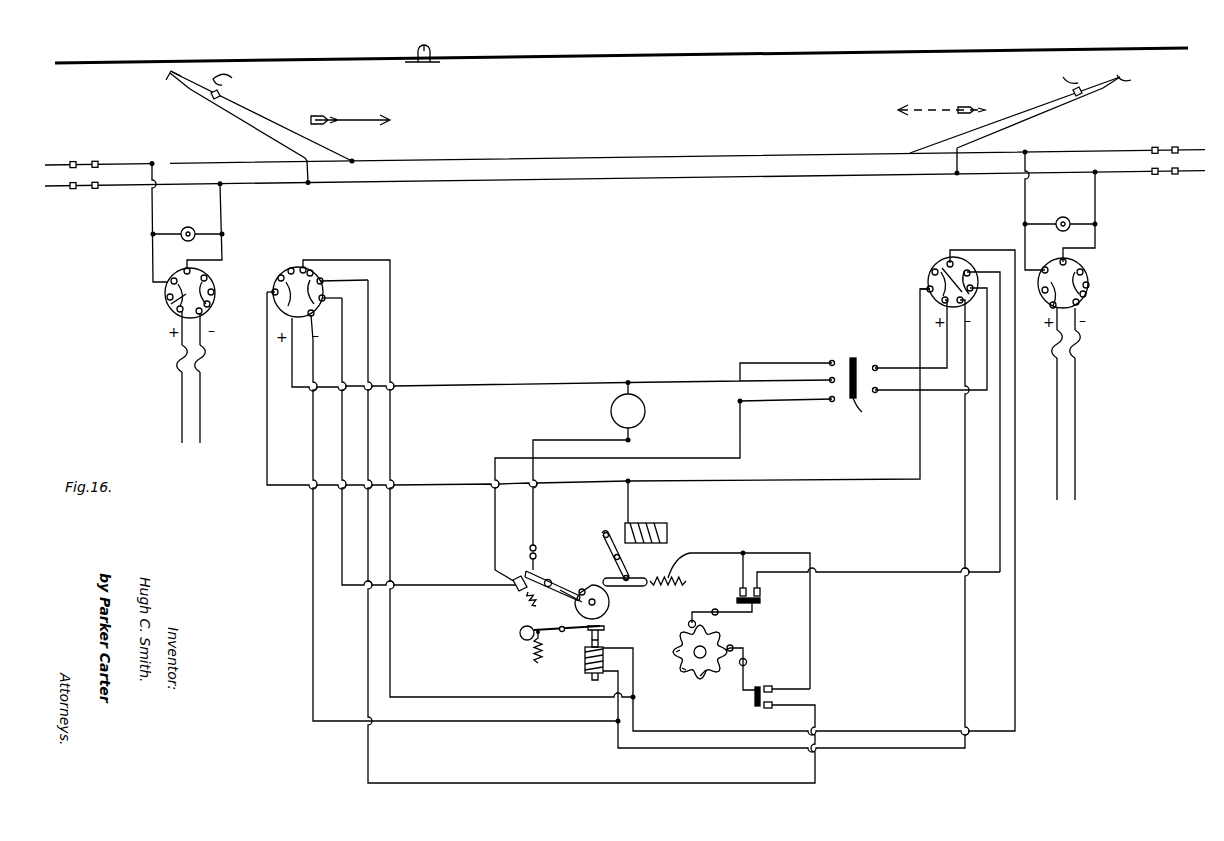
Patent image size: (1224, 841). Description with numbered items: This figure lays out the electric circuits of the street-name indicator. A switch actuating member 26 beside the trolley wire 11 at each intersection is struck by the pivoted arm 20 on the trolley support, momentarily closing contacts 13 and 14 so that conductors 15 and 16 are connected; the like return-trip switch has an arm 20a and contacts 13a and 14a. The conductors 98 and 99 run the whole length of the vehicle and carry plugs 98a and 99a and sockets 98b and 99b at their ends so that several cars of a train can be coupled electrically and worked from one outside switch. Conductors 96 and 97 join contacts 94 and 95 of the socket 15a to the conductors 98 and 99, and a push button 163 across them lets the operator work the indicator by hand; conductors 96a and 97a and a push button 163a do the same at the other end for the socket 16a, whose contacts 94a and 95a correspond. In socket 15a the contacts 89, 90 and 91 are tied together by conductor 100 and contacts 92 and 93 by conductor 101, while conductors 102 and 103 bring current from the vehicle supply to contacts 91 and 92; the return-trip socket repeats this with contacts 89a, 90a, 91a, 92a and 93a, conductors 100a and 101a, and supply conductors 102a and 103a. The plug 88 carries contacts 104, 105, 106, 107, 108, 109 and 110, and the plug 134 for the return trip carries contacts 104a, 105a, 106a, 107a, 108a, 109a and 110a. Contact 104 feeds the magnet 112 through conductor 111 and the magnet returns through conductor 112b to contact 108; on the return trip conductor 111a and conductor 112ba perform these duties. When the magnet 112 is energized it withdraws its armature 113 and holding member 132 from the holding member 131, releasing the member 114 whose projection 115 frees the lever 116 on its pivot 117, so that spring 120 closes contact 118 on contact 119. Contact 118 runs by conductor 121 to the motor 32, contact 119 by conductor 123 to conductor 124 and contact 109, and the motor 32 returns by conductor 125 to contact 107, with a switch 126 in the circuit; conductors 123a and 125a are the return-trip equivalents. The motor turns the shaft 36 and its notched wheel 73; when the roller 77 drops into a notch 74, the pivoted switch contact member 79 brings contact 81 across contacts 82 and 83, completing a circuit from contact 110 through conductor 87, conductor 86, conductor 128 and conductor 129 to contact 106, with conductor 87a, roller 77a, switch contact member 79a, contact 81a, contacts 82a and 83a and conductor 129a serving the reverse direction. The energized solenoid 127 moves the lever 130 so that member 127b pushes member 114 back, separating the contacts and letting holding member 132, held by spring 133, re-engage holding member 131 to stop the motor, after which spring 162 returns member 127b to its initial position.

The trolley wire 11 is at (588, 56).
The switch actuating member 26 is at (440, 62).
The pivoted arm 20 is at (166, 79).
The contact 13 is at (232, 78).
The contact 14 is at (212, 100).
The conductor 15 is at (262, 112).
The conductor 16 is at (258, 128).
The pivoted arm 20a is at (1130, 81).
The contact 13a is at (1068, 80).
The contact 14a is at (1085, 90).
The plug socket 15a is at (1015, 113).
The plug socket 16a is at (1025, 118).
The conductor 99 is at (53, 164).
The conductor 98 is at (52, 189).
The plug 99a is at (78, 160).
The socket 99b is at (98, 160).
The plug 98a is at (73, 191).
The socket 98b is at (96, 191).
The conductor 96a is at (152, 206).
The conductor 97a is at (226, 201).
The push button 163a is at (188, 227).
The conductor 96 is at (1025, 193).
The conductor 97 is at (1097, 193).
The push button 163 is at (1063, 217).
The contact 94a is at (171, 279).
The contact 95a is at (185, 268).
The contact 89a is at (207, 279).
The conductor 100a is at (214, 292).
The contact 90a is at (210, 303).
The contact 93a is at (168, 297).
The conductor 101a is at (172, 302).
The contact 92a is at (178, 312).
The contact 91a is at (180, 330).
The conductor 103a is at (181, 410).
The conductor 102a is at (202, 408).
The plug 134 is at (293, 266).
The contact 105a is at (280, 274).
The contact 104a is at (312, 270).
The contact 106a is at (274, 288).
The contact 110a is at (345, 261).
The contact 109a is at (368, 280).
The contact 108a is at (342, 298).
The contact 107a is at (313, 318).
The conductor 111a is at (390, 258).
The conductor 87a is at (368, 337).
The conductor 123a is at (342, 358).
The conductor 112ba is at (490, 721).
The conductor 129a is at (267, 460).
The conductor 125a is at (488, 384).
The conductor 125 is at (668, 381).
The electric motor 32 is at (611, 411).
The conductor 123 is at (695, 458).
The conductor 121 is at (535, 496).
The conductor 129 is at (798, 479).
The conductor 128 is at (630, 496).
The solenoid 127 is at (665, 520).
The lever 130 is at (603, 546).
The member 127b is at (655, 575).
The spring 162 is at (705, 552).
The conductor 86 is at (743, 569).
The contact 83 is at (738, 591).
The contact 82 is at (762, 591).
The conductor 87 is at (842, 572).
The contact 81 is at (758, 603).
The switch contact member 79 is at (693, 612).
The roller 77 is at (688, 624).
The shaft 36 is at (705, 648).
The notches 74 is at (676, 656).
The notched wheel 73 is at (682, 666).
The roller 77a is at (735, 646).
The switch contact member 79a is at (748, 660).
The contact 81a is at (757, 708).
The contact 83a is at (772, 686).
The contact 82a is at (768, 710).
The contact 118 is at (525, 572).
The pivot 117 is at (548, 579).
The contact 119 is at (513, 587).
The spring 120 is at (528, 598).
The lever 116 is at (560, 594).
The member 114 is at (610, 600).
The projection 115 is at (580, 588).
The holding member 131 is at (605, 627).
The armature 113 is at (522, 628).
The spring 133 is at (534, 658).
The holding member 132 is at (584, 658).
The magnet 112 is at (591, 680).
The conductor 111 is at (1015, 585).
The conductor 112b is at (905, 748).
The conductor 124 is at (803, 399).
The switch 126 is at (863, 412).
The plug 88 is at (942, 265).
The contact 109 is at (940, 268).
The contact 105 is at (932, 270).
The contact 106 is at (927, 289).
The contact 107 is at (942, 300).
The contact 108 is at (957, 303).
The contact 104 is at (940, 255).
The contact 110 is at (967, 268).
The conductor 101 is at (1080, 262).
The contact 94 is at (1042, 268).
The contact 95 is at (1060, 259).
The contact 89 is at (1083, 270).
The conductor 100 is at (1089, 284).
The contact 90 is at (1086, 293).
The contact 91 is at (1078, 308).
The contact 93 is at (1043, 293).
The contact 92 is at (1052, 310).
The conductor 103 is at (1056, 420).
The conductor 102 is at (1077, 429).